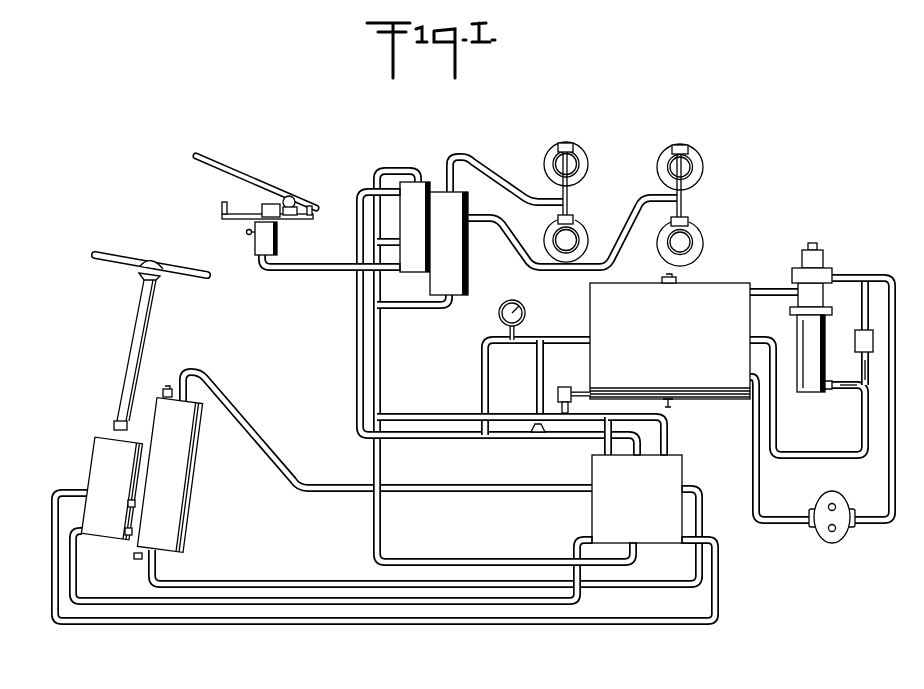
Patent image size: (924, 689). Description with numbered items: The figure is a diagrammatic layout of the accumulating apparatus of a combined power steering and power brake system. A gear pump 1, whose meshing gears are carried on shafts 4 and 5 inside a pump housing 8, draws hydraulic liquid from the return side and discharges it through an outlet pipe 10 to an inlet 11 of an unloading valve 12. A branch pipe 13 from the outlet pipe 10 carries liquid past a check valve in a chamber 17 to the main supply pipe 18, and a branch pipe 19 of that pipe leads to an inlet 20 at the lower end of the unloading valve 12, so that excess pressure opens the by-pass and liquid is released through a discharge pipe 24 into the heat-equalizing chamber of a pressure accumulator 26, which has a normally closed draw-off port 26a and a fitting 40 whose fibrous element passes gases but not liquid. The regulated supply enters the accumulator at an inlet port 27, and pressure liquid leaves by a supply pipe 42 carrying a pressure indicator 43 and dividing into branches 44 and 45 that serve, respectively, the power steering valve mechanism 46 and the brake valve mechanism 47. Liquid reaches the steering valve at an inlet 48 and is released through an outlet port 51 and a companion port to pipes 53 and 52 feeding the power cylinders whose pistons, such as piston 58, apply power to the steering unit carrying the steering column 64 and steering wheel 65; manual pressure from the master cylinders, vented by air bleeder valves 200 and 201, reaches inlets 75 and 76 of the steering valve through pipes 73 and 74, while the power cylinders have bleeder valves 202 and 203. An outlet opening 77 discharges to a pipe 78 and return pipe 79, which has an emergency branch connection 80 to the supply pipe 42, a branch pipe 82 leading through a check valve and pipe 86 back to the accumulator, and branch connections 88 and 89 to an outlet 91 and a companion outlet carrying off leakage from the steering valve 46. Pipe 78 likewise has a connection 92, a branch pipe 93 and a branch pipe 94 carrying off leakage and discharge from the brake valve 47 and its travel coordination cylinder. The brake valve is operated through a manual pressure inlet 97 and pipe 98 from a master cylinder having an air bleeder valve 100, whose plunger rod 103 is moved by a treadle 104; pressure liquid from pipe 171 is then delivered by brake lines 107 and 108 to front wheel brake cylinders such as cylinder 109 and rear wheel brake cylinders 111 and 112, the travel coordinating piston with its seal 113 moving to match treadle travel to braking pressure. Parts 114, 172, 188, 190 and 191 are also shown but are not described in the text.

The gear pump 1 is at (848, 494).
The shaft 4 is at (836, 507).
The shaft 5 is at (838, 529).
The pump housing 8 is at (820, 493).
The outlet pipe 10 is at (890, 276).
The inlet 11 is at (834, 277).
The unloading valve 12 is at (836, 255).
The branch pipe 13 is at (867, 308).
The chamber 17 is at (874, 335).
The main supply pipe 18 is at (868, 372).
The branch pipe 19 is at (851, 381).
The inlet 20 is at (828, 390).
The discharge pipe 24 is at (769, 289).
The pressure accumulator 26 is at (722, 277).
The draw-off port 26a is at (676, 405).
The inlet port 27 is at (768, 336).
The filler cap 40 is at (664, 279).
The supply pipe 42 is at (556, 340).
The pressure indicator 43 is at (524, 308).
The branch 44 is at (523, 437).
The branch 45 is at (447, 437).
The power steering valve mechanism 46 is at (674, 477).
The brake valve mechanism 47 is at (436, 158).
The inlet 48 is at (640, 450).
The outlet port 51 is at (688, 486).
The pipe 52 is at (222, 400).
The pipe 53 is at (700, 507).
The piston 58 is at (203, 481).
The steering column 64 is at (113, 427).
The steering wheel 65 is at (126, 259).
The pipe 73 is at (53, 529).
The pipe 74 is at (77, 584).
The inlet 75 is at (584, 533).
The inlet 76 is at (683, 544).
The outlet opening 77 is at (636, 549).
The pipe 78 is at (500, 563).
The return pipe 79 is at (419, 417).
The emergency branch connection 80 is at (541, 360).
The branch pipe 82 is at (561, 409).
The pipe 86 is at (567, 387).
The branch connection 88 is at (606, 428).
The branch connection 89 is at (669, 432).
The outlet 91 is at (544, 427).
The connection 92 is at (396, 170).
The branch pipe 93 is at (390, 238).
The branch pipe 94 is at (420, 306).
The manual pressure inlet 97 is at (395, 270).
The pipe 98 is at (318, 270).
The air bleeder valve 100 is at (247, 232).
The plunger rod 103 is at (262, 210).
The treadle 104 is at (233, 176).
The brake line 107 is at (499, 179).
The brake line 108 is at (516, 233).
The front wheel brake operating cylinder 109 is at (566, 143).
The rear wheel brake operating cylinder 111 is at (681, 145).
The rear wheel brake operating cylinder 112 is at (688, 219).
The seal 113 is at (573, 217).
The piston 114 is at (826, 356).
The pipe 171 is at (355, 309).
The port 172 is at (388, 187).
The bracket 188 is at (222, 211).
The pivot 190 is at (306, 202).
The spring 191 is at (276, 201).
The air bleeder valve 200 is at (136, 504).
The air bleeder valve 201 is at (133, 533).
The air bleeder valve 202 is at (166, 387).
The air bleeder valve 203 is at (136, 559).